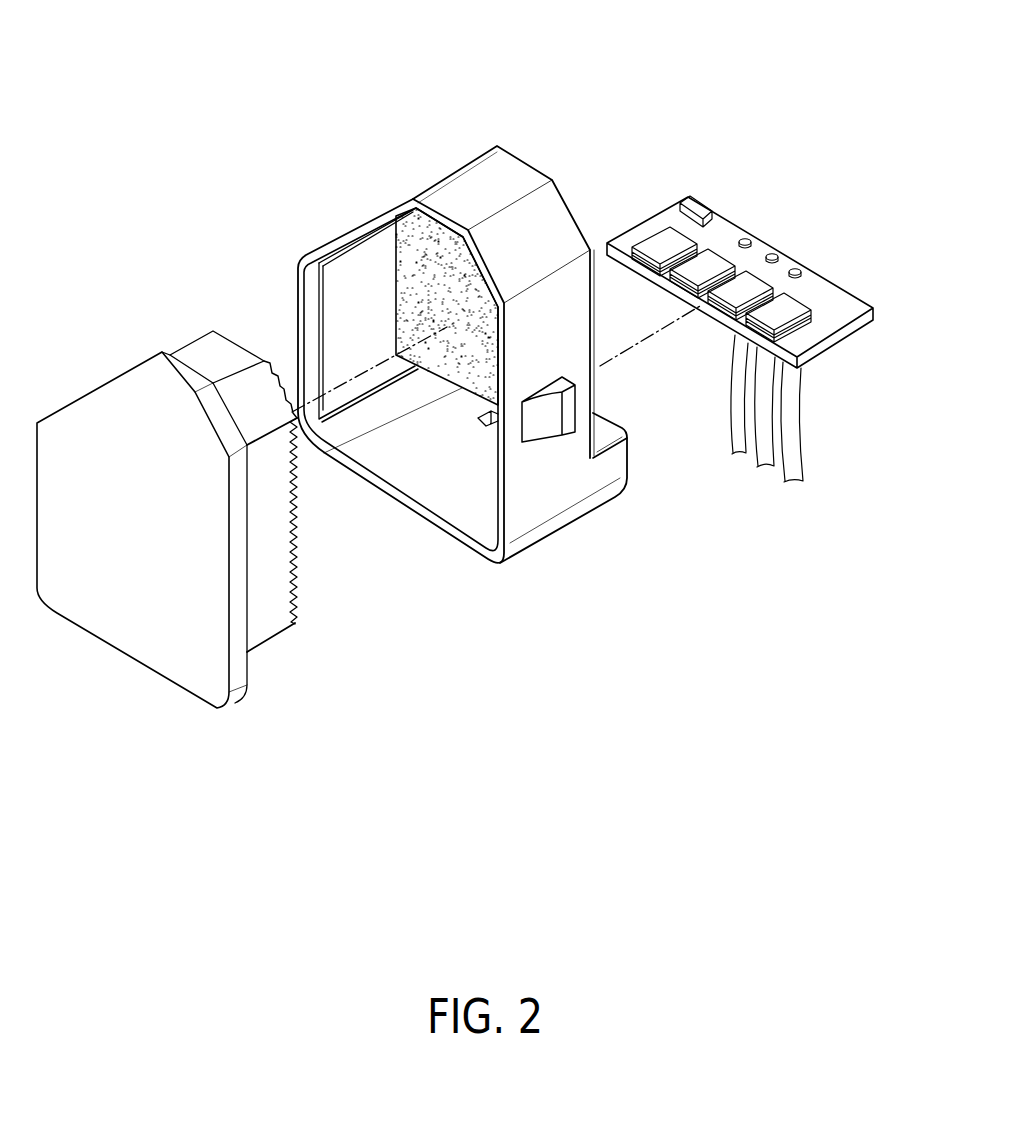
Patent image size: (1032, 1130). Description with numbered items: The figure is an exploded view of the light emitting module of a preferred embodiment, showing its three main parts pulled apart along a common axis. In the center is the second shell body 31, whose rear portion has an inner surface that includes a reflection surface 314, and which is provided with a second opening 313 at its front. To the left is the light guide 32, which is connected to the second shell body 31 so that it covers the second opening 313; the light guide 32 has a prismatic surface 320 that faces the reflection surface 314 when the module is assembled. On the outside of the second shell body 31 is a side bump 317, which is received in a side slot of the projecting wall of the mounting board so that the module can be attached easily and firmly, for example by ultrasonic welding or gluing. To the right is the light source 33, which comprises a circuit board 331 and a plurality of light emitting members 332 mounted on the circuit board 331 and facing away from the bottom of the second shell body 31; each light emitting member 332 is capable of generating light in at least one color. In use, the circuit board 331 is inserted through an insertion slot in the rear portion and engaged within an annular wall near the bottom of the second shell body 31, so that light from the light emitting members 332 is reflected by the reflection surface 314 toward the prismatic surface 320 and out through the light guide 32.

The second shell body 31 is at (451, 324).
The second opening 313 is at (367, 243).
The reflection surface 314 is at (461, 354).
The side bump 317 is at (543, 428).
The light guide 32 is at (107, 382).
The prismatic surface 320 is at (304, 555).
The light source 33 is at (761, 281).
The circuit board 331 is at (843, 335).
The light emitting member 332 is at (789, 305).